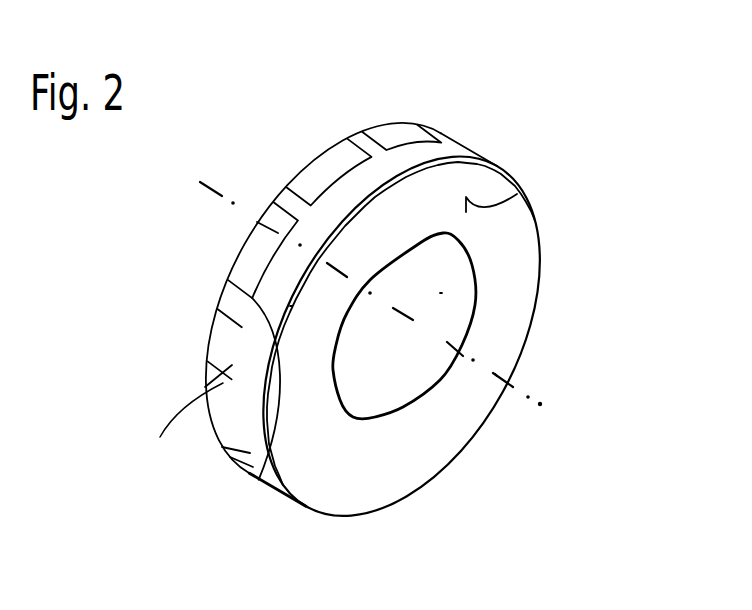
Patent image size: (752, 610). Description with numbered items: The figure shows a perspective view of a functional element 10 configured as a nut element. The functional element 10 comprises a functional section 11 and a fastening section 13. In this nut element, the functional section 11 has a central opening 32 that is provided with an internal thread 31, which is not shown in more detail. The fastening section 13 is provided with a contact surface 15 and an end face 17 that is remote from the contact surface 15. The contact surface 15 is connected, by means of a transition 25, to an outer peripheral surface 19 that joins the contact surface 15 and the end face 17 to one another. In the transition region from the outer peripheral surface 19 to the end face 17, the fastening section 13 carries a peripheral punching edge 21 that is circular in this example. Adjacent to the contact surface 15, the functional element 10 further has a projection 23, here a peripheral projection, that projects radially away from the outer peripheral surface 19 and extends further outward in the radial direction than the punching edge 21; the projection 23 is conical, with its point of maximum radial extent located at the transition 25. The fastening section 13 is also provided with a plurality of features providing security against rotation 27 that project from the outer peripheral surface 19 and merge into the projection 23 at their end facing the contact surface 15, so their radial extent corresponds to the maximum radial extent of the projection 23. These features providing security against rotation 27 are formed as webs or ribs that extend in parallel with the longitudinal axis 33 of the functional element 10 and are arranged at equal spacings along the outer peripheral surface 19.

The functional element 10 is at (603, 160).
The functional section 11 is at (417, 348).
The fastening section 13 is at (518, 238).
The contact surface 15 is at (537, 230).
The end face 17 is at (307, 158).
The outer peripheral surface 19 is at (248, 249).
The peripheral punching edge 21 is at (392, 122).
The projection 23 is at (247, 353).
The transition 25 is at (290, 306).
The features providing security against rotation 27 is at (250, 452).
The internal thread 31 is at (380, 398).
The central opening 32 is at (438, 293).
The longitudinal axis 33 is at (498, 374).